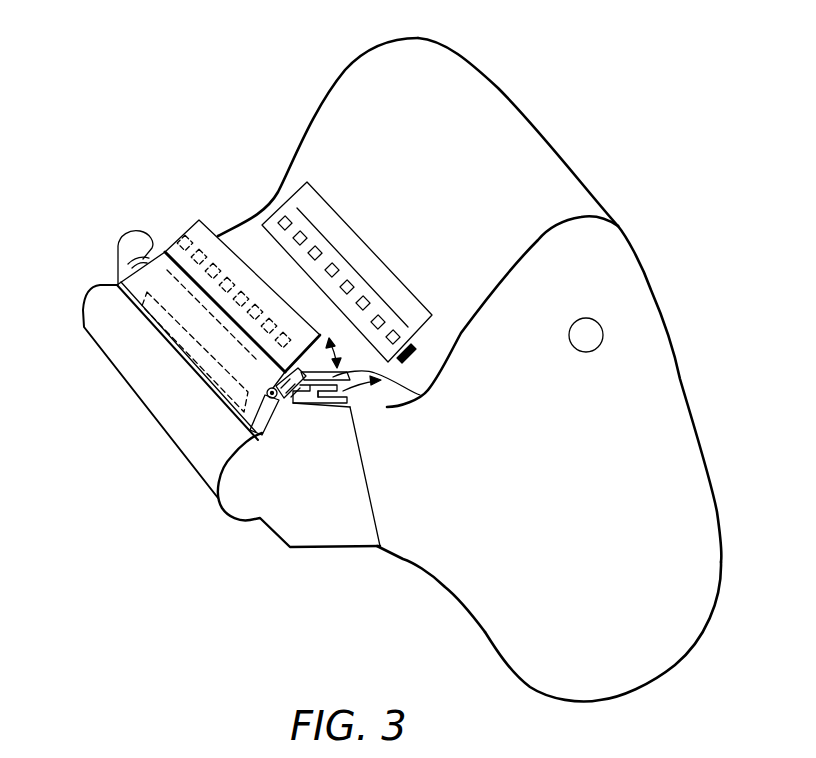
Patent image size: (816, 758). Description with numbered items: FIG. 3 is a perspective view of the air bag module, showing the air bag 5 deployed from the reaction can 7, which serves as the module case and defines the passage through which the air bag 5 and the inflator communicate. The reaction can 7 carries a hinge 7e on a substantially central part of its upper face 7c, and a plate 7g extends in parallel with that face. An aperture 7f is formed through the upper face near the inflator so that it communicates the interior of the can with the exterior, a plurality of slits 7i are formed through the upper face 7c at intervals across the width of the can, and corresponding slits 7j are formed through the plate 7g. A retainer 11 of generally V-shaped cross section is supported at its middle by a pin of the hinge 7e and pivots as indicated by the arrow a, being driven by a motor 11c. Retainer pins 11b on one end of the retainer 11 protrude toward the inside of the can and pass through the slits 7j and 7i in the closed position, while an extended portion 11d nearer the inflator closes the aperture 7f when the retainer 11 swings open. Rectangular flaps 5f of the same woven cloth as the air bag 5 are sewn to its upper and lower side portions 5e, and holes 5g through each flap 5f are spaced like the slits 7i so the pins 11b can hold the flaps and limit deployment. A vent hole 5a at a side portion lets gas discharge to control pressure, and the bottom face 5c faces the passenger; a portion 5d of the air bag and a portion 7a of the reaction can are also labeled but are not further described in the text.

The air bag 5 is at (498, 88).
The vent hole 5a is at (593, 352).
The bottom face 5c is at (652, 290).
The lower body portion 5d is at (518, 592).
The upper and lower surfaces 5e is at (332, 124).
The rectangular flaps 5f is at (270, 222).
The holes 5g is at (287, 220).
The reaction can 7 is at (200, 477).
The flange 7a is at (376, 488).
The upper face 7c is at (318, 400).
The hinge 7e is at (255, 440).
The aperture 7f is at (153, 320).
The plate 7g is at (350, 410).
The slits 7i is at (335, 408).
The slits 7j is at (420, 395).
The retainer 11 is at (173, 244).
The retainer pins 11b is at (298, 412).
The motor 11c is at (124, 244).
The extended portion 11d is at (255, 428).
The arrow a is at (340, 353).